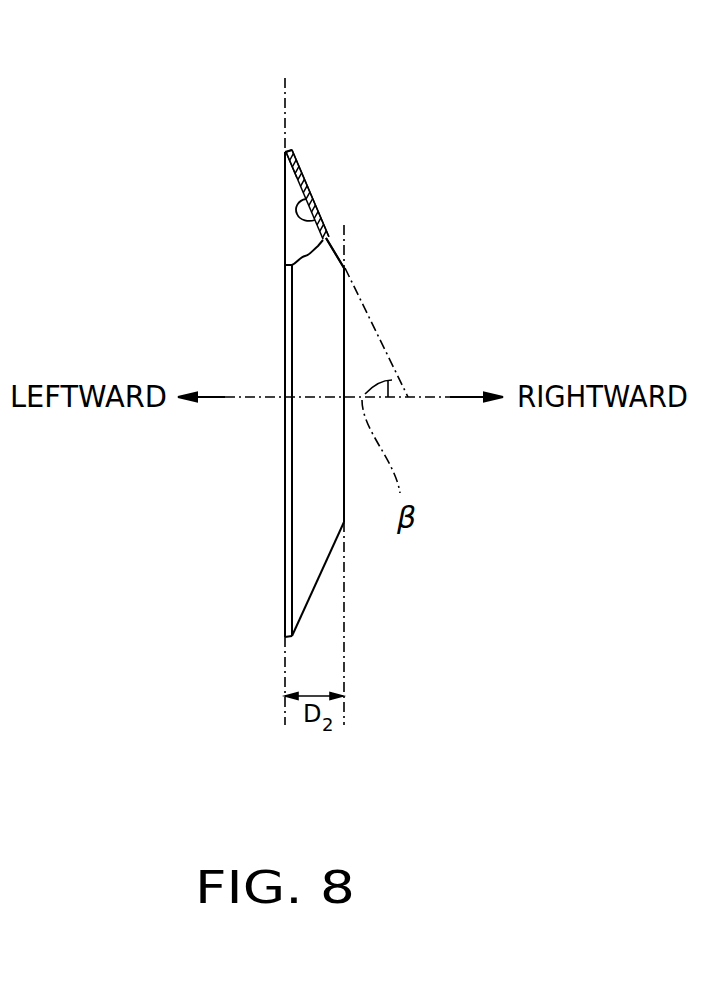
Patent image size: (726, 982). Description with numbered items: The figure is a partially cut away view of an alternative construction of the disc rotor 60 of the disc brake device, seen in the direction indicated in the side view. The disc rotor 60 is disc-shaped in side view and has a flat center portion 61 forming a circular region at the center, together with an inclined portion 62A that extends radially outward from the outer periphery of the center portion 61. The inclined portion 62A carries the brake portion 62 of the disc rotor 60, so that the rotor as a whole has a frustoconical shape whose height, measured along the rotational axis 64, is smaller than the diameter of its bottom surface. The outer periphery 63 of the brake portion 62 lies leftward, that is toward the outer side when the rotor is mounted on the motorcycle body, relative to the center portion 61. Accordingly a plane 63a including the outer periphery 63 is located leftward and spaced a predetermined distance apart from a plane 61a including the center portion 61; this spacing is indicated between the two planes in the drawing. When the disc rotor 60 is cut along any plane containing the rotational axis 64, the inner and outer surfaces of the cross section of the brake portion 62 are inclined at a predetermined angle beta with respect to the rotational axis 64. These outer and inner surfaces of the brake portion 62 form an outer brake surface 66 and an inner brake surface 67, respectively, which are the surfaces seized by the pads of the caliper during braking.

The disc rotor 60 is at (326, 128).
The center portion 61 is at (348, 320).
The plane including the center portion 61a is at (344, 660).
The brake portion 62 is at (460, 117).
The inclined portion 62A is at (302, 170).
The outer periphery 63 is at (288, 150).
The plane including the outer periphery 63a is at (283, 678).
The rotational axis 64 is at (418, 397).
The outer brake surface 66 is at (313, 195).
The inner brake surface 67 is at (322, 225).